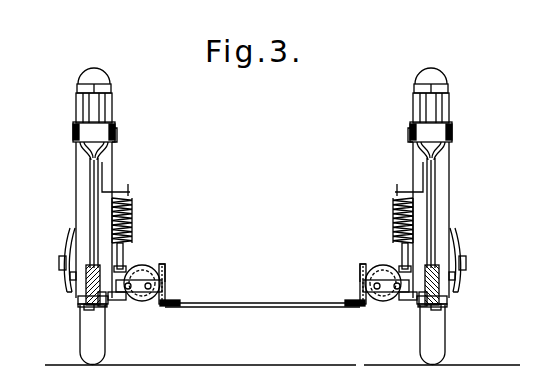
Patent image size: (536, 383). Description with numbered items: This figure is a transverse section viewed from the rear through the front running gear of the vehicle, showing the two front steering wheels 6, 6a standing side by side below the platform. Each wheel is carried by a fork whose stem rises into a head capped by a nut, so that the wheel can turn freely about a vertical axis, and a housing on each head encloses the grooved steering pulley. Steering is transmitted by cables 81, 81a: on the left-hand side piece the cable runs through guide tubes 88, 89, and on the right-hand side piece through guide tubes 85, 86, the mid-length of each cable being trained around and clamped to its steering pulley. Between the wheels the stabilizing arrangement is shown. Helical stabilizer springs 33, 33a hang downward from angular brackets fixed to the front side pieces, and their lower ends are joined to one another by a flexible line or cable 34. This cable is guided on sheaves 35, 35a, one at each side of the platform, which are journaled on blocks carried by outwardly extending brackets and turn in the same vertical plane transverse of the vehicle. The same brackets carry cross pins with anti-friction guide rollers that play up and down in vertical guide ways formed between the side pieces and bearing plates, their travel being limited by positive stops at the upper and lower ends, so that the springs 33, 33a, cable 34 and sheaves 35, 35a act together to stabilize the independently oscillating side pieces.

The front wheel 6 is at (80, 345).
The front wheel 6a is at (445, 345).
The helical stabilizer spring 33 is at (131, 204).
The helical stabilizer spring 33a is at (393, 206).
The flexible connecting line or cable 34 is at (328, 307).
The sheave 35 is at (143, 301).
The sheave 35a is at (383, 301).
The cable 81 is at (72, 276).
The cable 81a is at (477, 276).
The guide tube 85 is at (412, 146).
The guide tube 86 is at (436, 167).
The guide tube 88 is at (90, 188).
The guide tube 89 is at (113, 138).